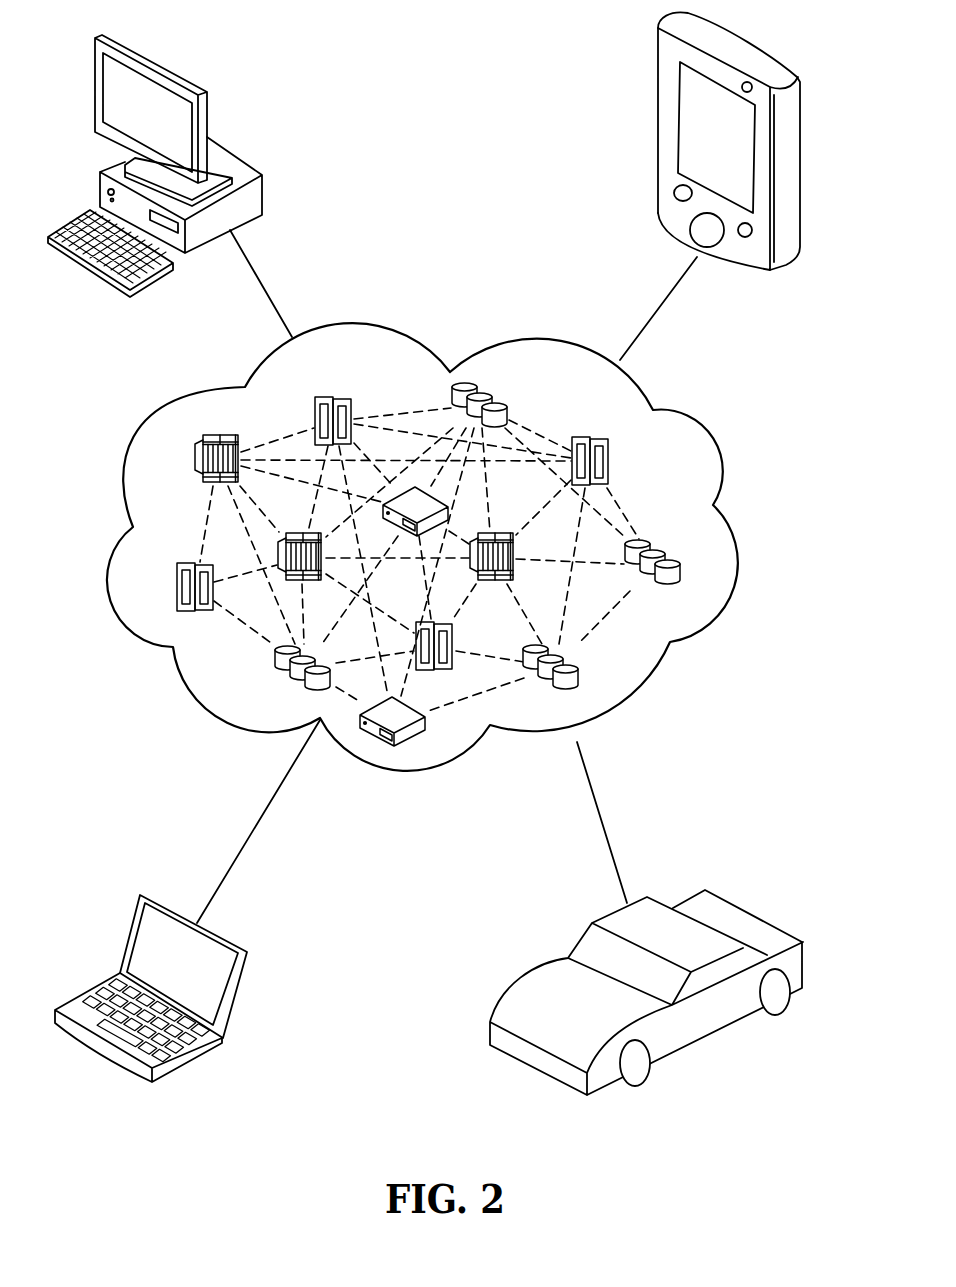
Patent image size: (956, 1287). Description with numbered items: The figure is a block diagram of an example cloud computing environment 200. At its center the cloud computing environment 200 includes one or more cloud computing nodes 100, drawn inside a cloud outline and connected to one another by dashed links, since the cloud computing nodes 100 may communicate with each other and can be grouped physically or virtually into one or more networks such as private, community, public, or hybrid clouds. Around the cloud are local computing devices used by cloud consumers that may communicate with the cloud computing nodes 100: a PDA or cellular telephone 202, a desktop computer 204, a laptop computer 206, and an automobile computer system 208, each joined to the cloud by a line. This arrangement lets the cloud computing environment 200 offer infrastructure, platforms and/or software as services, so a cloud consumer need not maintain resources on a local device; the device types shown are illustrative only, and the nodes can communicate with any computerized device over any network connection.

The cloud computing nodes 100 is at (668, 481).
The cloud computing environment 200 is at (452, 228).
The PDA or cellular telephone 202 is at (658, 88).
The desktop computer 204 is at (263, 190).
The laptop computer 206 is at (248, 960).
The automobile computer system 208 is at (805, 958).